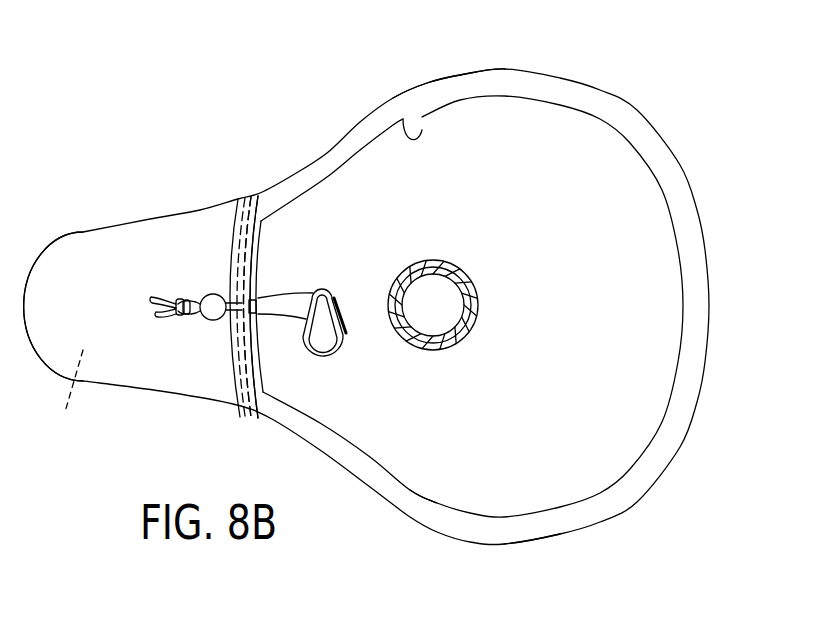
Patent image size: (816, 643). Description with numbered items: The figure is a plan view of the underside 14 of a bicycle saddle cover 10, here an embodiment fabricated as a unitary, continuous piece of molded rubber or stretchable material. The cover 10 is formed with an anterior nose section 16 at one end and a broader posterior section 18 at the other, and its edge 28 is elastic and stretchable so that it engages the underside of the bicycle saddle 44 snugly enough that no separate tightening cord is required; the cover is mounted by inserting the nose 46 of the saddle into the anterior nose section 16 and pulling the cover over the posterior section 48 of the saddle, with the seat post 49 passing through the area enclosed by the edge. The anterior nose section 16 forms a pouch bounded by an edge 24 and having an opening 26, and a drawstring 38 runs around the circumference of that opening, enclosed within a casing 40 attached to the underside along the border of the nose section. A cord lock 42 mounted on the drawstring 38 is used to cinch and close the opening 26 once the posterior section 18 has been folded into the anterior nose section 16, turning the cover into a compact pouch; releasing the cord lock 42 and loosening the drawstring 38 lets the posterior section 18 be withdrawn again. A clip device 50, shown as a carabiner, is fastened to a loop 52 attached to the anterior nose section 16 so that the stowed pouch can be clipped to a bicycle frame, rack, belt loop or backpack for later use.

The cover 10 is at (726, 272).
The underside 14 is at (606, 111).
The anterior nose section 16 is at (95, 251).
The posterior section 18 is at (507, 126).
The edge 24 is at (263, 236).
The opening 26 is at (266, 265).
The elasticized edge 28 is at (422, 134).
The drawstring 38 is at (165, 313).
The second casing 40 is at (233, 231).
The cord lock 42 is at (213, 300).
The bicycle saddle 44 is at (575, 480).
The nose 46 is at (68, 397).
The posterior section of the saddle 48 is at (513, 493).
The seat post 49 is at (435, 352).
The clip device 50 is at (332, 362).
The loop 52 is at (285, 318).